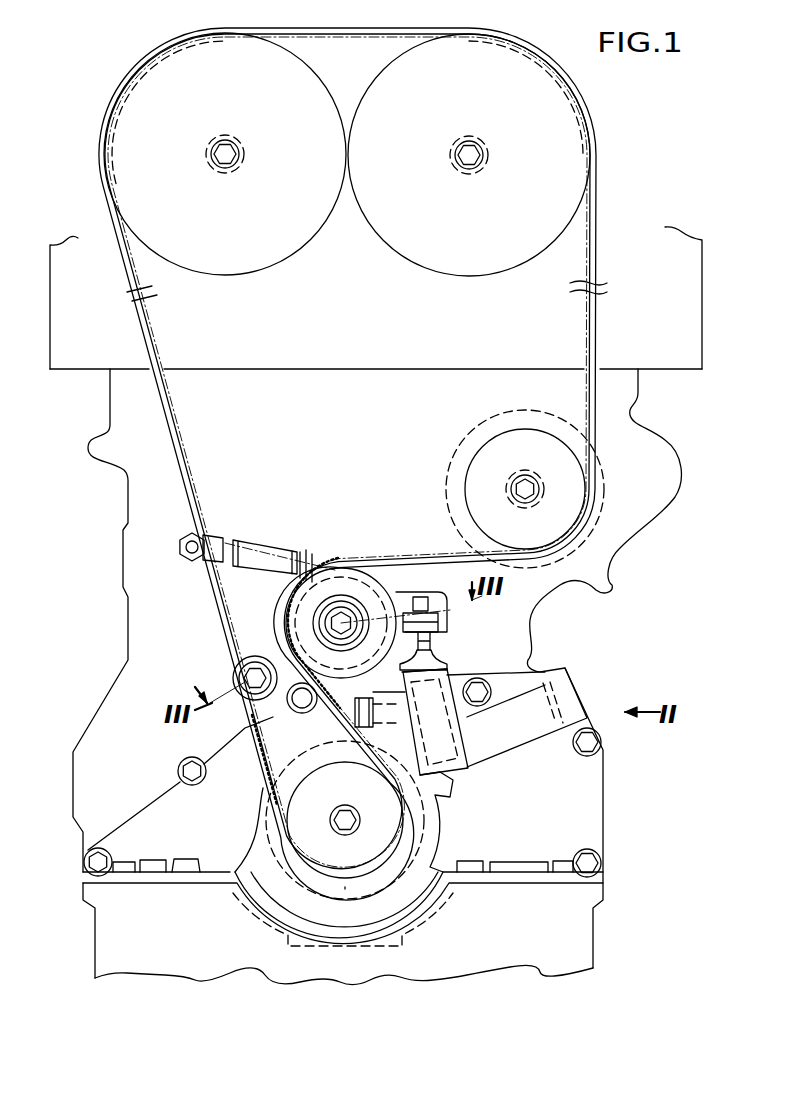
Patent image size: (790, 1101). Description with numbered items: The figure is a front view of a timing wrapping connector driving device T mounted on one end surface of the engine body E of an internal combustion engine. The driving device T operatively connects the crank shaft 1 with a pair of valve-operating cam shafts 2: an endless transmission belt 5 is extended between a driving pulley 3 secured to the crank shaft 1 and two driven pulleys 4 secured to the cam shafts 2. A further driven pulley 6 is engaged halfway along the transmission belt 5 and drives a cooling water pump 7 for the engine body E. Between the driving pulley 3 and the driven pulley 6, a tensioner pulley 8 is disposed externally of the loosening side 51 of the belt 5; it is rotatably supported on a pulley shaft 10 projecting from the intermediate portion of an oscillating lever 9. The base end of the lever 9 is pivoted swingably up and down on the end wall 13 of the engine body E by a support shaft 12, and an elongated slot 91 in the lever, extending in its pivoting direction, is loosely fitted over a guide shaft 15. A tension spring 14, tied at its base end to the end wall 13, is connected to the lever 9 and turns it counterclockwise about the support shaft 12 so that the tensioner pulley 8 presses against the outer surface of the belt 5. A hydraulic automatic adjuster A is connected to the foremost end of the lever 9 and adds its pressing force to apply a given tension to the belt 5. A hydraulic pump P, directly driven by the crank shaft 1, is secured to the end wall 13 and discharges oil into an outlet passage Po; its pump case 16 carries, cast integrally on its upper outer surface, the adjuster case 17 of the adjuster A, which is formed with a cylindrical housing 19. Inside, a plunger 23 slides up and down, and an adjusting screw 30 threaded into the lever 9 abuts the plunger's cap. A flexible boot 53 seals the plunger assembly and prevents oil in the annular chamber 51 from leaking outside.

The crank shaft 1 is at (360, 820).
The valve-operating cam shafts 2 is at (248, 148).
The driving pulley 3 is at (313, 855).
The driven pulleys 4 is at (333, 74).
The transmission belt 5 is at (148, 330).
The driven pulley 6 is at (503, 438).
The cooling water pump 7 is at (607, 480).
The tensioner pulley 8 is at (397, 580).
The oscillating lever 9 is at (282, 682).
The pulley shaft 10 is at (333, 610).
The support shaft 12 is at (248, 660).
The end wall 13 is at (192, 660).
The tension spring 14 is at (304, 556).
The guide shaft 15 is at (333, 633).
The pump case 16 is at (437, 828).
The adjuster case 17 is at (376, 726).
The cylindrical housing 19 is at (452, 740).
The plunger 23 is at (456, 671).
The adjusting screw 30 is at (421, 600).
The annular chamber 51 is at (383, 556).
The flexible boot 53 is at (440, 656).
The slot 91 is at (360, 620).
The engine body E is at (48, 327).
The timing wrapping connector driving device T is at (165, 432).
The hydraulic pump P is at (363, 898).
The outlet passage Po is at (587, 690).
The hydraulic automatic adjuster A is at (458, 655).